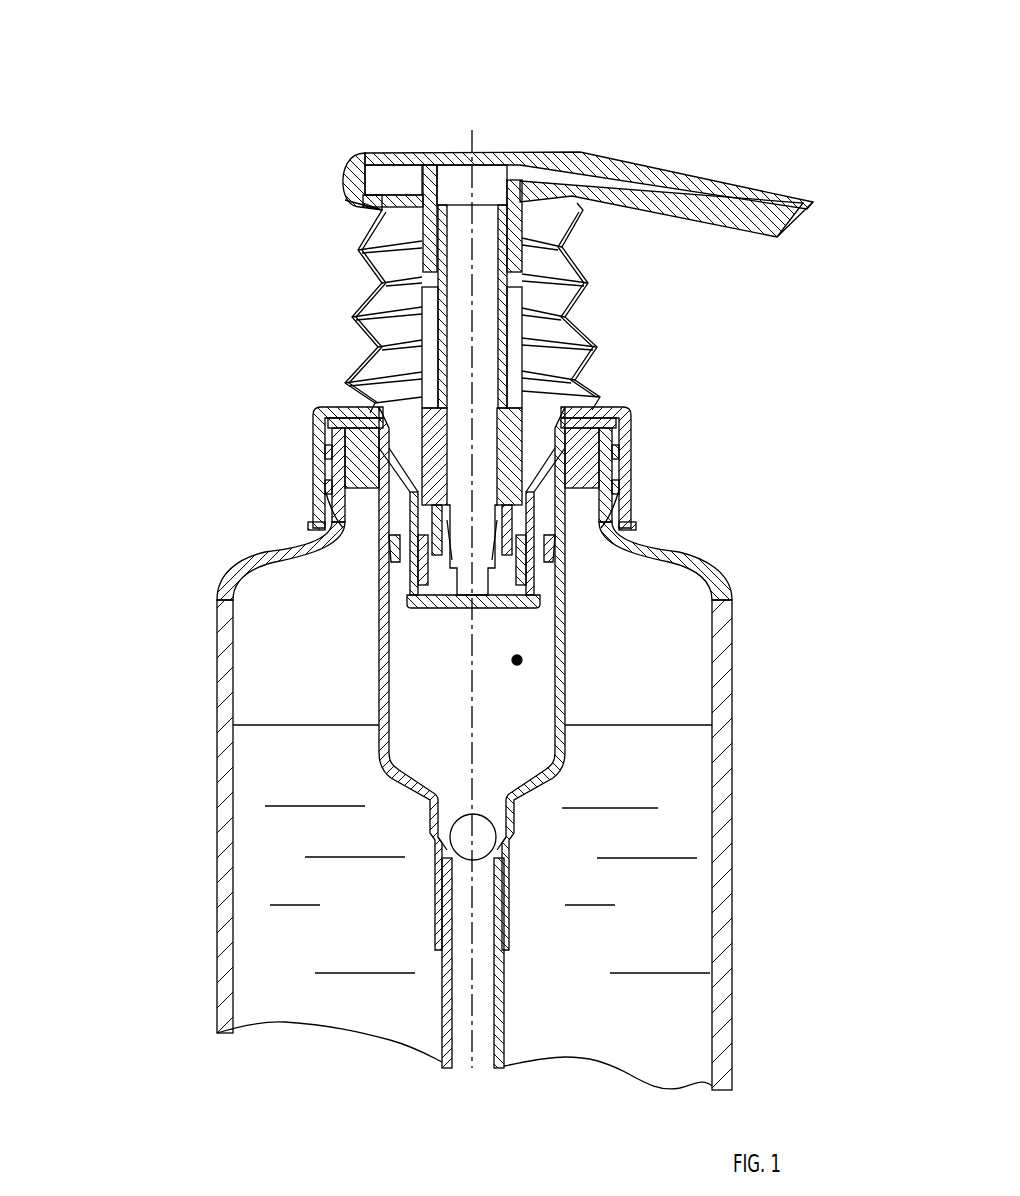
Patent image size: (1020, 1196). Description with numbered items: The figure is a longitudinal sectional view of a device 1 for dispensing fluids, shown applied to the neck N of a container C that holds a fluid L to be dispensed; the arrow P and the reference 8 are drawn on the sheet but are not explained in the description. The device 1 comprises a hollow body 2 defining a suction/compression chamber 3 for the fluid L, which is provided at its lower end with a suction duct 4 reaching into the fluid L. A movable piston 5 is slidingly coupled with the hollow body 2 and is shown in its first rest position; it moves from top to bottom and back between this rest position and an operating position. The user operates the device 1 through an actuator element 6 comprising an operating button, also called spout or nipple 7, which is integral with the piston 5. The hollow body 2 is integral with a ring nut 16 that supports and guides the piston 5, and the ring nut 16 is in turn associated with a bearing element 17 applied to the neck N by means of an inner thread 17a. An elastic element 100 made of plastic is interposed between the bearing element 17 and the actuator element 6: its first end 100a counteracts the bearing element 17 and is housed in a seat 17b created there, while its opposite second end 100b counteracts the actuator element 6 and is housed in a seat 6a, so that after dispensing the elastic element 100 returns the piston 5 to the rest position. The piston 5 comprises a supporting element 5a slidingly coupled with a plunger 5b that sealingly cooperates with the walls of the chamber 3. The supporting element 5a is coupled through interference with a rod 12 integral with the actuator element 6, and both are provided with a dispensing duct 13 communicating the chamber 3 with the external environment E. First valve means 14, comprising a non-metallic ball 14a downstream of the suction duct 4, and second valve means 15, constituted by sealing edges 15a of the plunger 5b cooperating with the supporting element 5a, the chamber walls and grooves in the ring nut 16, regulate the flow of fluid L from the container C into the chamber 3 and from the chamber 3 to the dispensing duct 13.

The device for dispensing fluids 1 is at (154, 114).
The hollow body 2 is at (570, 690).
The suction/compression chamber 3 is at (520, 660).
The suction duct 4 is at (508, 992).
The piston 5 is at (406, 582).
The supporting element 5a is at (425, 608).
The plunger 5b is at (389, 575).
The actuator element 6 is at (518, 175).
The seat 6a is at (345, 200).
The operating button (spout or nipple) 7 is at (655, 175).
The pump 8 is at (127, 235).
The rod 12 is at (516, 357).
The dispensing duct 13 is at (483, 283).
The first valve means 14 is at (327, 871).
The ball 14a is at (462, 850).
The second valve means 15 is at (624, 562).
The sealing edges 15a is at (540, 522).
The ring nut 16 is at (575, 410).
The bearing element 17 is at (519, 447).
The inner thread 17a is at (608, 462).
The seat 17b is at (325, 409).
The elastic element 100 is at (359, 308).
The first end 100a is at (322, 395).
The second end 100b is at (360, 213).
The container C is at (737, 672).
The fluid L is at (650, 930).
The neck N is at (606, 505).
The pressing direction P is at (472, 97).
The external environment E is at (868, 200).